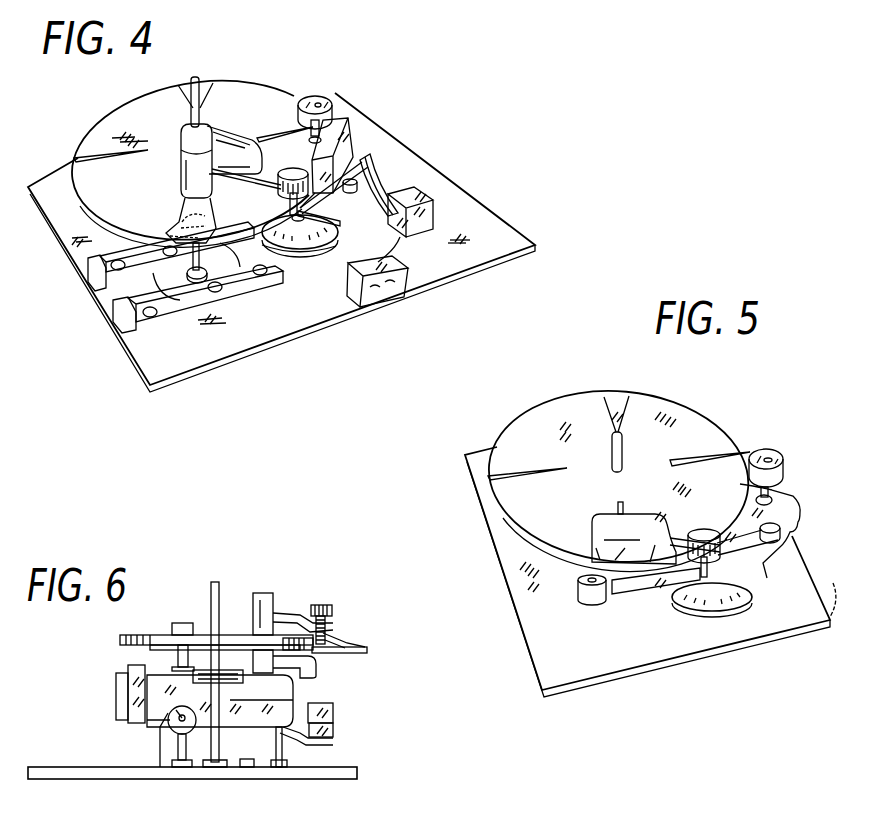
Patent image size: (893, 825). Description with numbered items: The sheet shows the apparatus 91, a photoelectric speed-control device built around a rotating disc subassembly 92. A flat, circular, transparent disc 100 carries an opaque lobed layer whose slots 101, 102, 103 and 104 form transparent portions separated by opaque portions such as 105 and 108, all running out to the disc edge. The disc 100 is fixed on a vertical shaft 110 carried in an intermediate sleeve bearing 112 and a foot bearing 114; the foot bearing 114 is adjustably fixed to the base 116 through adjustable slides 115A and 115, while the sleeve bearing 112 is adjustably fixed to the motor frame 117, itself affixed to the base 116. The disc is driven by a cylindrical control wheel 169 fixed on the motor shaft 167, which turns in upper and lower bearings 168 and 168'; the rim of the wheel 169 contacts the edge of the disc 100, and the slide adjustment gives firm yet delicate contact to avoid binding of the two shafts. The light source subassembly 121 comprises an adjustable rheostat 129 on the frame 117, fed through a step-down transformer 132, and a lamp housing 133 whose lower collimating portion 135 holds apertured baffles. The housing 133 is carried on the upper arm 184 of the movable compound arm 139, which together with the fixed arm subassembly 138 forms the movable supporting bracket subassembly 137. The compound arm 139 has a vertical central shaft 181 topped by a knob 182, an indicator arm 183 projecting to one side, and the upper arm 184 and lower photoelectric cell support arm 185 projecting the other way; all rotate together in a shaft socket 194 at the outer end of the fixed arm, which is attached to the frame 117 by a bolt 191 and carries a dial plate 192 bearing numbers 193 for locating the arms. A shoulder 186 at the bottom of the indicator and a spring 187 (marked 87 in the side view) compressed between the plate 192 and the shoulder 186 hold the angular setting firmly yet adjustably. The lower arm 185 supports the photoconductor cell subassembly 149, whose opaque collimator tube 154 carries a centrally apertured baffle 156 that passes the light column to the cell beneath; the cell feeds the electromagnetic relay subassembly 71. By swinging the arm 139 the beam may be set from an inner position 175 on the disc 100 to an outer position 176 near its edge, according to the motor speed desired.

In FIG. 4, the electromagnetic relay subassembly 71 is at (433, 217).
In FIG. 6, the electromagnetic relay subassembly 71 is at (333, 720).
In FIG. 6, the support rail 87 is at (367, 651).
In FIG. 4, the apparatus 91 is at (458, 158).
In FIG. 5, the apparatus 91 is at (503, 428).
In FIG. 6, the apparatus 91 is at (60, 685).
In FIG. 5, the rotating disc subassembly 92 is at (565, 416).
In FIG. 4, the disc 100 is at (266, 90).
In FIG. 5, the disc 100 is at (715, 411).
In FIG. 6, the disc 100 is at (113, 642).
In FIG. 5, the slot 101 is at (620, 388).
In FIG. 4, the slot 102 is at (175, 226).
In FIG. 5, the slot 102 is at (614, 505).
In FIG. 5, the slot 103 is at (718, 458).
In FIG. 4, the slot 104 is at (74, 157).
In FIG. 5, the slot 104 is at (508, 475).
In FIG. 4, the opaque portion 105 is at (272, 123).
In FIG. 4, the opaque portion 108 is at (146, 131).
In FIG. 4, the vertical shaft 110 is at (197, 78).
In FIG. 5, the vertical shaft 110 is at (612, 464).
In FIG. 6, the vertical shaft 110 is at (218, 582).
In FIG. 6, the intermediate sleeve bearing 112 is at (228, 681).
In FIG. 4, the foot bearing 114 is at (135, 293).
In FIG. 6, the foot bearing 114 is at (207, 768).
In FIG. 4, the adjustable slide 115 is at (125, 317).
In FIG. 6, the adjustable slide 115 is at (258, 768).
In FIG. 4, the adjustable slide 115A is at (93, 278).
In FIG. 4, the base 116 is at (287, 325).
In FIG. 5, the base 116 is at (583, 663).
In FIG. 6, the base 116 is at (86, 766).
In FIG. 4, the motor frame 117 is at (353, 138).
In FIG. 5, the motor frame 117 is at (795, 517).
In FIG. 6, the motor frame 117 is at (290, 736).
In FIG. 5, the light source subassembly 121 is at (657, 506).
In FIG. 6, the adjustable rheostat 129 is at (166, 733).
In FIG. 6, the step-down transformer 132 is at (116, 718).
In FIG. 4, the lamp housing 133 is at (182, 150).
In FIG. 5, the lamp housing 133 is at (593, 530).
In FIG. 6, the collimating portion 135 is at (250, 636).
In FIG. 5, the movable supporting bracket subassembly 137 is at (687, 697).
In FIG. 6, the movable supporting bracket subassembly 137 is at (440, 583).
In FIG. 5, the fixed arm subassembly 138 is at (760, 560).
In FIG. 6, the fixed arm subassembly 138 is at (380, 720).
In FIG. 4, the movable compound arm 139 is at (263, 197).
In FIG. 6, the movable compound arm 139 is at (338, 560).
In FIG. 5, the photoconductor cell subassembly 149 is at (601, 612).
In FIG. 4, the collimator tube 154 is at (212, 218).
In FIG. 5, the collimator tube 154 is at (590, 598).
In FIG. 5, the opaque baffle 156 is at (588, 585).
In FIG. 6, the steel shaft 167 is at (182, 663).
In FIG. 6, the bearing 168 is at (127, 685).
In FIG. 6, the bearing 168' is at (163, 784).
In FIG. 4, the control wheel 169 is at (318, 98).
In FIG. 5, the control wheel 169 is at (762, 452).
In FIG. 6, the control wheel 169 is at (176, 628).
In FIG. 4, the inner beam position 175 is at (183, 190).
In FIG. 5, the outer beam position 176 is at (595, 560).
In FIG. 6, the central shaft 181 is at (335, 616).
In FIG. 6, the knob 182 is at (322, 605).
In FIG. 4, the indicator arm 183 is at (332, 243).
In FIG. 6, the indicator arm 183 is at (347, 638).
In FIG. 6, the light-emission source support arm 184 is at (300, 596).
In FIG. 5, the photoelectric cell support arm 185 is at (640, 592).
In FIG. 6, the photoelectric cell support arm 185 is at (305, 674).
In FIG. 4, the shoulder 186 is at (322, 217).
In FIG. 5, the spring 187 is at (702, 608).
In FIG. 4, the bolt 191 is at (380, 160).
In FIG. 4, the dial plate 192 is at (280, 253).
In FIG. 5, the dial plate 192 is at (684, 614).
In FIG. 6, the dial plate 192 is at (362, 655).
In FIG. 5, the numbers 193 is at (734, 595).
In FIG. 6, the shaft socket 194 is at (343, 672).